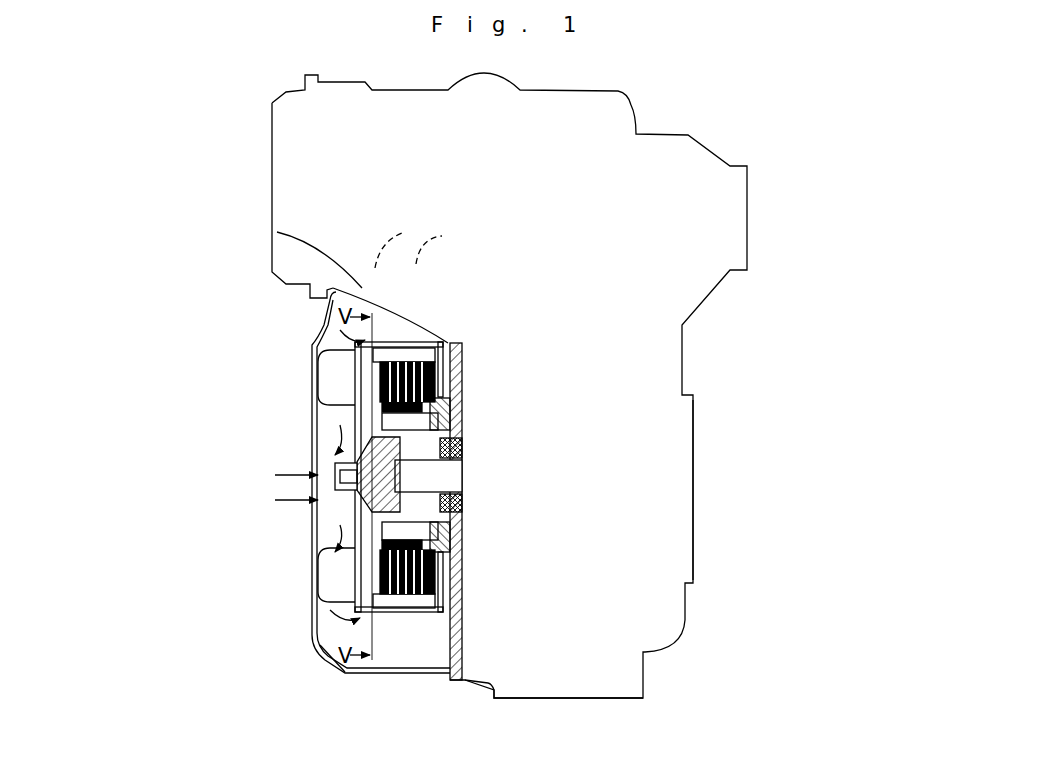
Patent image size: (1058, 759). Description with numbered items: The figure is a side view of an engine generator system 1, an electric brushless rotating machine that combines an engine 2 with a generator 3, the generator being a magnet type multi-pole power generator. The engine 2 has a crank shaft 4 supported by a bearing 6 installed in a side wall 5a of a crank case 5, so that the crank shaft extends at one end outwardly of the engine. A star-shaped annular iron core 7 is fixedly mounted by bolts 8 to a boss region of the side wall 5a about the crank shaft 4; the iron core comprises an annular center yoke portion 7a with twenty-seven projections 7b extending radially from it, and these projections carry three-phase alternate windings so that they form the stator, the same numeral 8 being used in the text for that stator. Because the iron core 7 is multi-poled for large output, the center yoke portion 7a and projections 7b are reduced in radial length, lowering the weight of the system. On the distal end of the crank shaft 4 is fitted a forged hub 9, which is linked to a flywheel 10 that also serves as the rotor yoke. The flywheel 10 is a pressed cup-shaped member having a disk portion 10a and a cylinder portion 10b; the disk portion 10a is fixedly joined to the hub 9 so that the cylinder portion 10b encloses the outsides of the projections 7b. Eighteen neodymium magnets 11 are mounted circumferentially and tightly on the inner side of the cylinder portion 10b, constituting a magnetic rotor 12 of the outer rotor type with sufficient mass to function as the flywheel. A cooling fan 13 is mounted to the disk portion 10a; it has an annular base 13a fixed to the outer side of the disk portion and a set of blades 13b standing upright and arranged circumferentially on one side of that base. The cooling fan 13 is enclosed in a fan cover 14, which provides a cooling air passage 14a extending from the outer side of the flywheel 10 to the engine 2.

The engine generator system 1 is at (662, 124).
The engine 2 is at (708, 453).
The generator 3 is at (338, 521).
The crank shaft 4 is at (455, 477).
The crank case 5 is at (539, 545).
The side wall 5a is at (445, 668).
The bearing 6 is at (455, 448).
The iron core 7 is at (253, 476).
The center yoke portion 7a is at (330, 412).
The projections 7b is at (330, 378).
The bolts 8 is at (462, 409).
The hub 9 is at (320, 455).
The flywheel 10 is at (318, 488).
The disk portion 10a is at (320, 585).
The cylinder portion 10b is at (340, 625).
The neodymium magnets 11 is at (300, 672).
The magnetic rotor 12 is at (337, 507).
The cooling fan 13 is at (317, 478).
The annular base 13a is at (320, 562).
The blades 13b is at (312, 545).
The fan cover 14 is at (352, 668).
The cooling air passage 14a is at (277, 234).